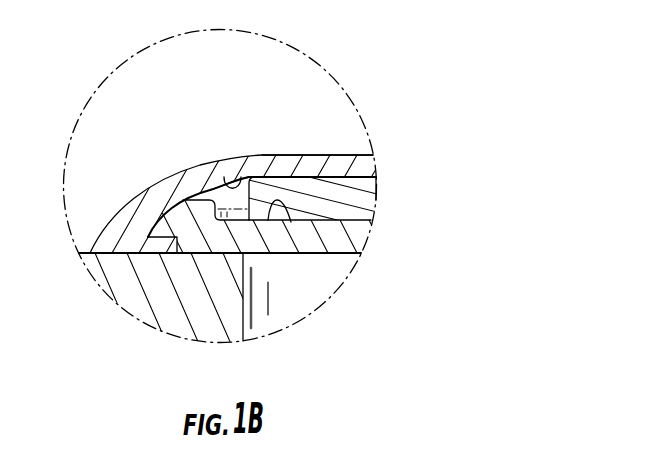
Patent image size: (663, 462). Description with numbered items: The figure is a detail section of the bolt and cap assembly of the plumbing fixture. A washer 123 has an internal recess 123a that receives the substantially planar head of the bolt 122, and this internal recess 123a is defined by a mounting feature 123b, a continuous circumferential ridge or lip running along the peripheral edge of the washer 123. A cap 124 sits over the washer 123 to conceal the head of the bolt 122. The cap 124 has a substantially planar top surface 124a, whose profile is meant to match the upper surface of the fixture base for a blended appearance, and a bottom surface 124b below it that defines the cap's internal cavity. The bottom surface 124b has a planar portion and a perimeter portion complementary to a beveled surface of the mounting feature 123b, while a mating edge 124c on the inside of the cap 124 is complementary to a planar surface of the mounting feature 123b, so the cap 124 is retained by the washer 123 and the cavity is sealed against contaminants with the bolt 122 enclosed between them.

The bolt 122 is at (377, 198).
The washer 123 is at (218, 236).
The internal recess 123a is at (291, 222).
The mounting feature 123b is at (186, 172).
The cap 124 is at (138, 218).
The top surface 124a is at (266, 155).
The bottom surface 124b is at (242, 172).
The mating edge 124c is at (158, 238).